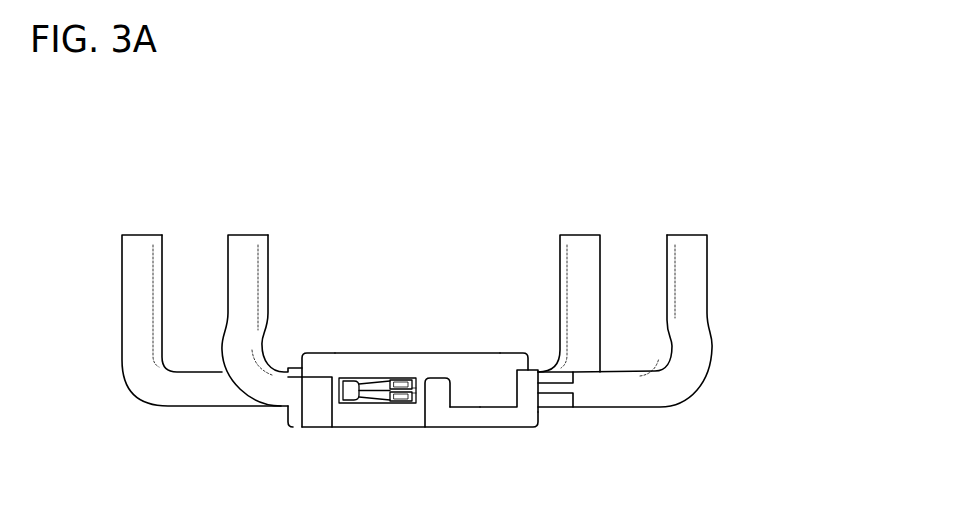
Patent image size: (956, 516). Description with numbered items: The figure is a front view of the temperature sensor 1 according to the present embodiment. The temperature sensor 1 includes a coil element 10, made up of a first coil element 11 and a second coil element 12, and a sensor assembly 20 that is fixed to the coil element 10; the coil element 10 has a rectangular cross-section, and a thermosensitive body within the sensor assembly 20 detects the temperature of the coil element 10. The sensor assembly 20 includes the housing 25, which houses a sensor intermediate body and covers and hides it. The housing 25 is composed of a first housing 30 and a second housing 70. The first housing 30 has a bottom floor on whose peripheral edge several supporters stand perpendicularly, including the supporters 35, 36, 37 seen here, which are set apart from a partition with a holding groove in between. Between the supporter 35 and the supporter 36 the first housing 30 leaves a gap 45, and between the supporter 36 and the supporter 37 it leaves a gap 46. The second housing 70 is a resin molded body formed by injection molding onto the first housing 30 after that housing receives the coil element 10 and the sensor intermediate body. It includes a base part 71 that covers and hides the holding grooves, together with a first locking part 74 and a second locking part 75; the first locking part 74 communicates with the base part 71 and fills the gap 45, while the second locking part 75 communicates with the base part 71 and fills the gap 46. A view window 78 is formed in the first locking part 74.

The temperature sensor 1 is at (506, 217).
The coil element 10 is at (672, 158).
The first coil element 11 is at (684, 234).
The second coil element 12 is at (581, 234).
The sensor assembly 20 is at (466, 346).
The housing 25 is at (490, 352).
The first housing 30 is at (431, 436).
The supporter 35 is at (322, 376).
The supporter 36 is at (437, 377).
The supporter 37 is at (531, 369).
The gap 45 is at (338, 413).
The gap 46 is at (510, 395).
The second housing 70 is at (369, 346).
The base part 71 is at (401, 377).
The first locking part 74 is at (379, 428).
The second locking part 75 is at (471, 408).
The view window 78 is at (358, 402).